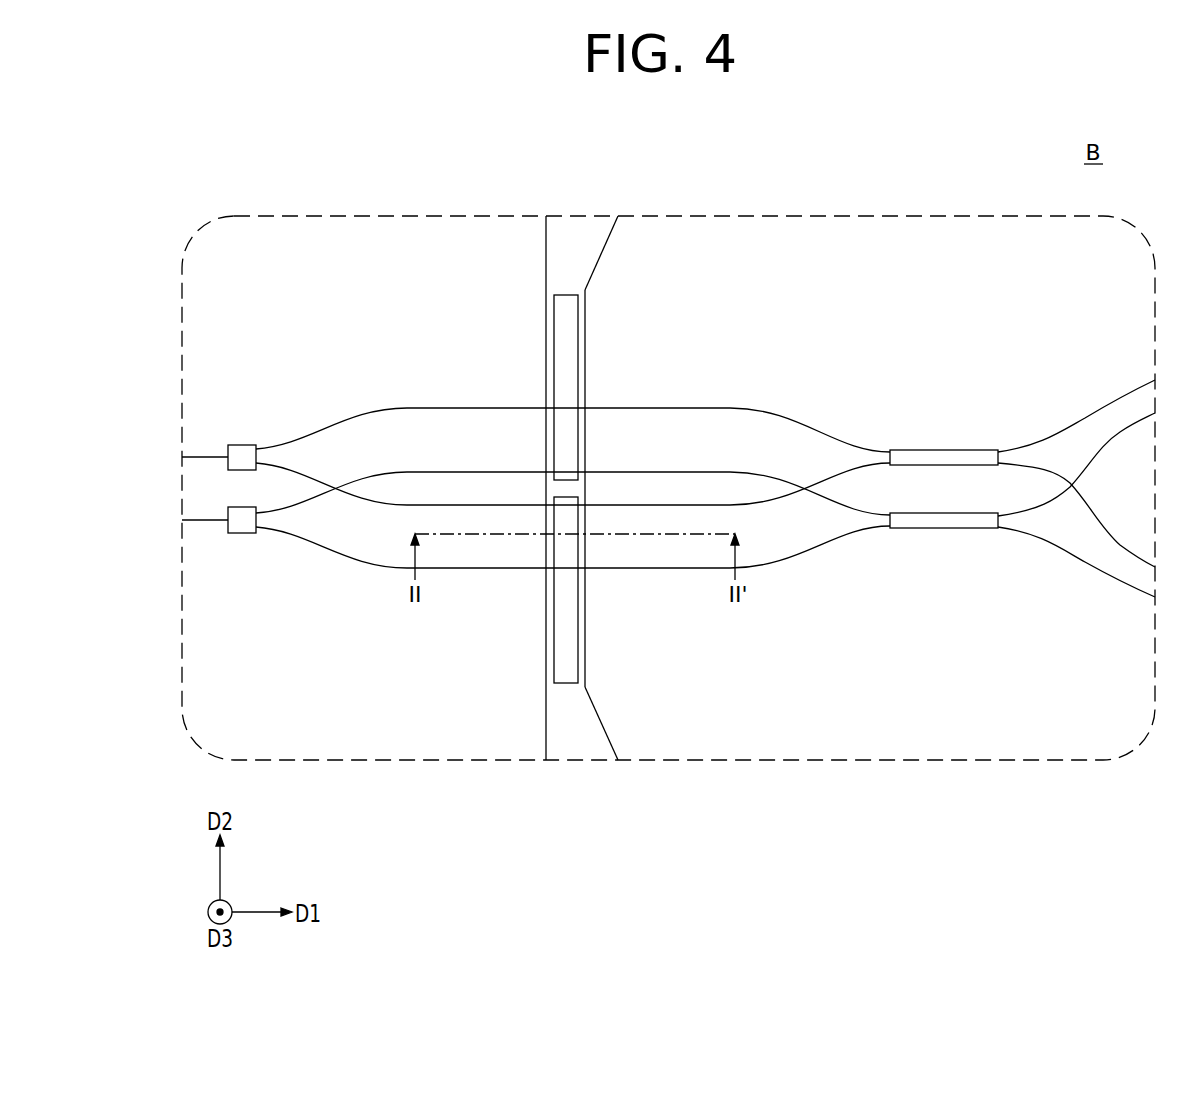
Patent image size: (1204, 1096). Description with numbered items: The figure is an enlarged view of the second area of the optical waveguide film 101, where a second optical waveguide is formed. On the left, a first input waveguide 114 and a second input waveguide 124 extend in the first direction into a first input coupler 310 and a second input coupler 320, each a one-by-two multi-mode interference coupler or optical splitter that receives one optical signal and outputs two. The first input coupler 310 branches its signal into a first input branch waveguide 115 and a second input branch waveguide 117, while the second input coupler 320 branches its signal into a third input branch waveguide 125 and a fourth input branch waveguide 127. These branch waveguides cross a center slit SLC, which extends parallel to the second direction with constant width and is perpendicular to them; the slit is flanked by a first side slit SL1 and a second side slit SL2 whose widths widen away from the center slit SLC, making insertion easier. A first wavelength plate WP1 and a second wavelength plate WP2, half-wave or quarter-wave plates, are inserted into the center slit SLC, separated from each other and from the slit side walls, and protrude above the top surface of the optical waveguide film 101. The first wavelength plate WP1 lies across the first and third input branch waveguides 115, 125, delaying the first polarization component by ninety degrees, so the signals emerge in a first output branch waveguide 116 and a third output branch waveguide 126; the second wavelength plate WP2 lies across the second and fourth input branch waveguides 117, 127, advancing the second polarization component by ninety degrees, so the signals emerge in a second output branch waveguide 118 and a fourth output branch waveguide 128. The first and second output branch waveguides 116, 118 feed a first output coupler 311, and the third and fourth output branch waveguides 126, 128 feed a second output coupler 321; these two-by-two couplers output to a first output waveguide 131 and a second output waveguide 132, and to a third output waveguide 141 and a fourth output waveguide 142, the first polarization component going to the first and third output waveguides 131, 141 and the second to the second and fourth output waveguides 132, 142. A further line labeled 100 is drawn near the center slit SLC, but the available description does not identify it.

The substrate 100 is at (558, 708).
The optical waveguide film 101 is at (873, 748).
The first input waveguide 114 is at (195, 452).
The second input waveguide 124 is at (195, 527).
The first input coupler 310 is at (253, 452).
The second input coupler 320 is at (253, 530).
The first input branch waveguide 115 is at (518, 408).
The third input branch waveguide 125 is at (463, 472).
The second input branch waveguide 117 is at (463, 505).
The fourth input branch waveguide 127 is at (518, 568).
The first output branch waveguide 116 is at (718, 408).
The third output branch waveguide 126 is at (770, 472).
The second output branch waveguide 118 is at (638, 505).
The fourth output branch waveguide 128 is at (693, 568).
The first output coupler 311 is at (943, 455).
The second output coupler 321 is at (943, 524).
The first output waveguide 131 is at (1125, 395).
The second output waveguide 132 is at (1097, 527).
The third output waveguide 141 is at (1097, 453).
The fourth output waveguide 142 is at (1125, 580).
The first side slit SL1 is at (595, 268).
The second side slit SL2 is at (595, 705).
The center slit SLC is at (585, 383).
The first wavelength plate WP1 is at (570, 342).
The second wavelength plate WP2 is at (568, 662).